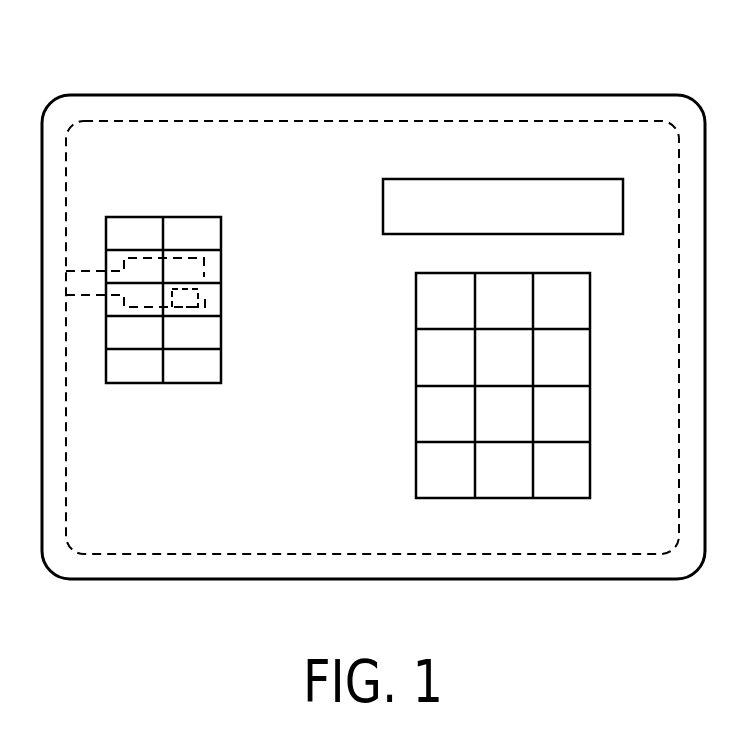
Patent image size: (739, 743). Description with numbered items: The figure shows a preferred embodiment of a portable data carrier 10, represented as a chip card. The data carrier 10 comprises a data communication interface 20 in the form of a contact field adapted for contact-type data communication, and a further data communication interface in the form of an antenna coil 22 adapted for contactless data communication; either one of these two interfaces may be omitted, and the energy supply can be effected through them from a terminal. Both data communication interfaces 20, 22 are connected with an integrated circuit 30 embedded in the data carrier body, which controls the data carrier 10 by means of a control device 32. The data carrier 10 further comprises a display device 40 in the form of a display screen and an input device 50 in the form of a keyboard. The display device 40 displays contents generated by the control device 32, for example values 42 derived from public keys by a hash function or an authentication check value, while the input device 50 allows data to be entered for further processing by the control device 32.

The portable data carrier 10 is at (380, 95).
The data communication interface 20 is at (192, 217).
The antenna coil 22 is at (288, 125).
The integrated circuit 30 is at (205, 277).
The control device 32 is at (197, 295).
The display device 40 is at (383, 208).
The values 42 is at (440, 207).
The input device 50 is at (416, 414).